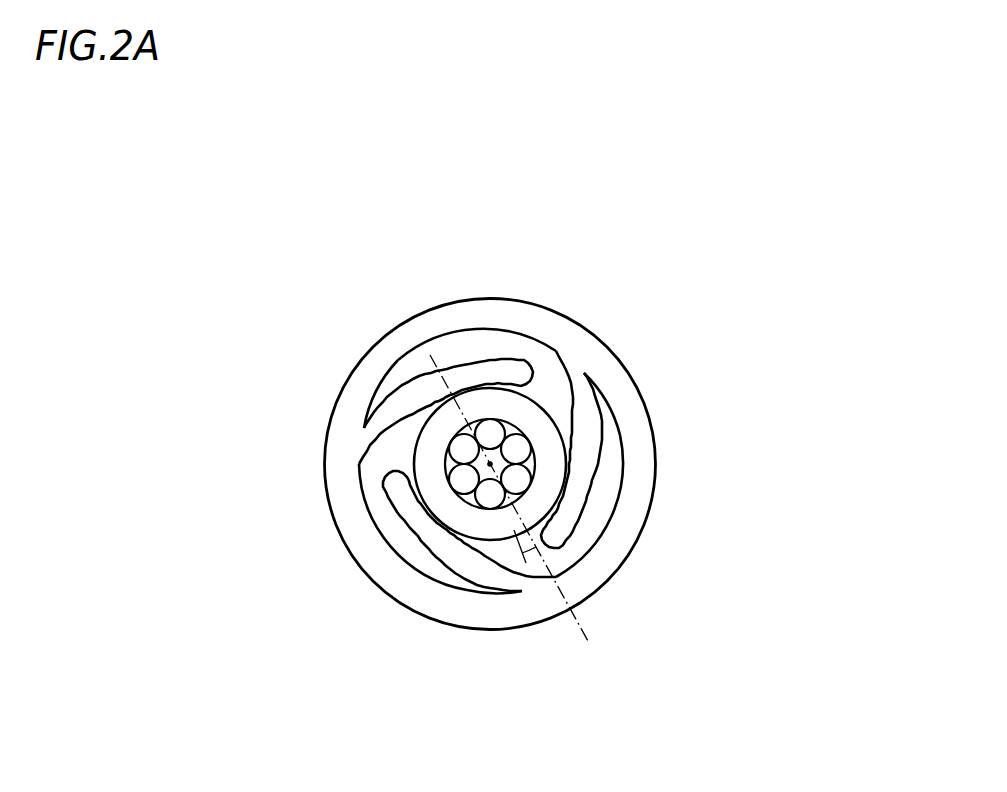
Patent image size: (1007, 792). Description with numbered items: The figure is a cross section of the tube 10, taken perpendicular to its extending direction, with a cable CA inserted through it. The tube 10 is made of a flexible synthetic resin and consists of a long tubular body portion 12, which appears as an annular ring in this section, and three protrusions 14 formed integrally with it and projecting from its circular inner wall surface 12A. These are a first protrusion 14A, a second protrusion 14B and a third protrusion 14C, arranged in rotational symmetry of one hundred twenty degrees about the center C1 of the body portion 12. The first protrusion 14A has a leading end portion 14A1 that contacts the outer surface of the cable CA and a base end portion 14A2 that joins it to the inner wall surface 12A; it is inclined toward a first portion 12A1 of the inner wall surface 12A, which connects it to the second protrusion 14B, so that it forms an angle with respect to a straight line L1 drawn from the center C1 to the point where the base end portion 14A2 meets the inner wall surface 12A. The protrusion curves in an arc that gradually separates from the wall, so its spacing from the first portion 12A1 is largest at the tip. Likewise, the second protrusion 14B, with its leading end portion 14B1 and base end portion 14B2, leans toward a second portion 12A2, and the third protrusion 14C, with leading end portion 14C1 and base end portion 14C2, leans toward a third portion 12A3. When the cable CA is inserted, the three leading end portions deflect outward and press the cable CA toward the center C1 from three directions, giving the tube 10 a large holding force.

The tube 10 is at (645, 630).
The body portion 12 is at (483, 461).
The inner wall surface 12A is at (502, 441).
The first portion of inner wall surface 12A1 is at (403, 546).
The second portion of inner wall surface 12A2 is at (427, 350).
The third portion of inner wall surface 12A3 is at (605, 440).
The protrusions 14 is at (483, 503).
The first protrusion 14A is at (363, 587).
The leading end portion 14A1 is at (442, 542).
The base end portion 14A2 is at (510, 576).
The second protrusion 14B is at (330, 375).
The leading end portion 14B1 is at (413, 396).
The base end portion 14B2 is at (364, 428).
The third protrusion 14C is at (709, 436).
The leading end portion 14C1 is at (583, 443).
The base end portion 14C2 is at (588, 375).
The center of the body portion C1 is at (490, 464).
The cable CA is at (527, 413).
The straight line L1 is at (582, 645).